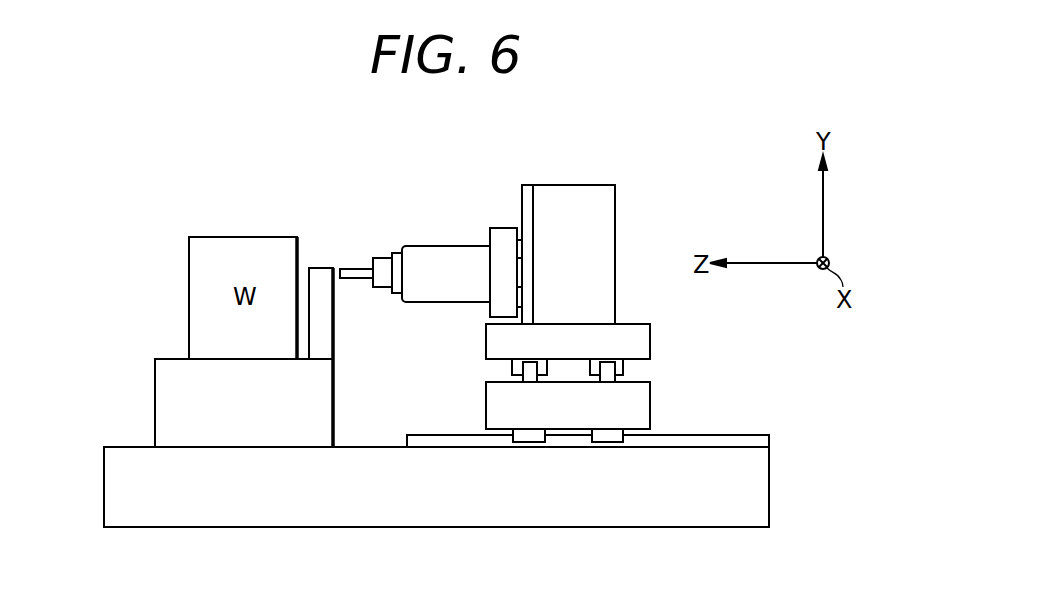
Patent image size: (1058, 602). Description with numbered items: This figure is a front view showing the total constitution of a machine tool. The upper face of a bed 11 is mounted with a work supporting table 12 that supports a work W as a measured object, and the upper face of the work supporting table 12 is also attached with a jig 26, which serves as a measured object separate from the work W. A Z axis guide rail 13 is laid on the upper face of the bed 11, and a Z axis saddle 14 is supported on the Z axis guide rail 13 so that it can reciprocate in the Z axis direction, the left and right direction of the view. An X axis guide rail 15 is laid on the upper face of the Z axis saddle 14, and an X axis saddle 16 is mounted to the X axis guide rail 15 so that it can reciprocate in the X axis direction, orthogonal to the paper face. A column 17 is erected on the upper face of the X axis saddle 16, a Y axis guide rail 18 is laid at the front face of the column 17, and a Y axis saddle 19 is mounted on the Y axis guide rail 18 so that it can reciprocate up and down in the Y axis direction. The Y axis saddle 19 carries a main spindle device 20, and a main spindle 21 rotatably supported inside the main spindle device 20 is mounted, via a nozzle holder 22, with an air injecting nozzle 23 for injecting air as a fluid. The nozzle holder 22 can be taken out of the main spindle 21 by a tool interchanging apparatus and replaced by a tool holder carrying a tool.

The bed 11 is at (760, 486).
The work supporting table 12 is at (162, 407).
The Z axis guide rail 13 is at (743, 438).
The Z axis saddle 14 is at (642, 407).
The X axis guide rail 15 is at (622, 377).
The X axis saddle 16 is at (640, 345).
The column 17 is at (607, 240).
The Y axis guide rail 18 is at (529, 190).
The Y axis saddle 19 is at (502, 235).
The main spindle device 20 is at (462, 253).
The main spindle 21 is at (398, 256).
The nozzle holder 22 is at (380, 259).
The air injecting nozzle 23 is at (345, 268).
The jig 26 is at (323, 334).